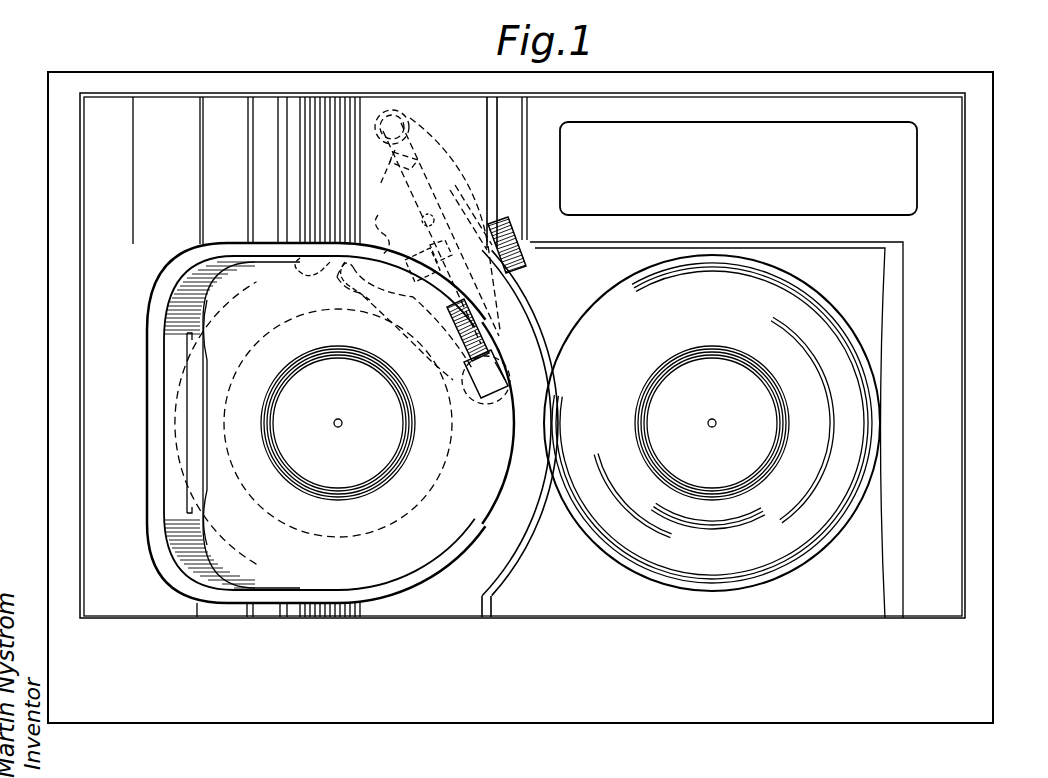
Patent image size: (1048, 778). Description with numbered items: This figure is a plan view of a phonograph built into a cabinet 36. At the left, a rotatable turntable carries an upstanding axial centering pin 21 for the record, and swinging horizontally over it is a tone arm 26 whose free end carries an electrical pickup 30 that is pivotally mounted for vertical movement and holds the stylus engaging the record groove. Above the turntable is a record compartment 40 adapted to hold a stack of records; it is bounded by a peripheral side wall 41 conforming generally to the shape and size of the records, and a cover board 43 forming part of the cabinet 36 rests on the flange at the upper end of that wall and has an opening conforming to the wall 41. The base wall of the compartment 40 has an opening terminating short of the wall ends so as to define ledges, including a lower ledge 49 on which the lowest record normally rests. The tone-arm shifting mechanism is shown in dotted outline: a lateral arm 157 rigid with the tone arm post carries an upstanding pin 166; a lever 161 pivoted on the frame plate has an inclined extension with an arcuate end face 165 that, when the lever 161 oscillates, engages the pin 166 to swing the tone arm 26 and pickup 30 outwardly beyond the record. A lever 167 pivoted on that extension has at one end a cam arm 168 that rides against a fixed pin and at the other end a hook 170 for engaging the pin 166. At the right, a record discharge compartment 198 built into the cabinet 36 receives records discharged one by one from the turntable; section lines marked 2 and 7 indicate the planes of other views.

The section line 2- 2 is at (70, 423).
The section line 7-7 / right turntable 7 is at (42, 423).
The centering pin 21 is at (343, 422).
The tone arm 26 is at (460, 320).
The electrical pickup 30 is at (470, 373).
The cabinet 36 is at (247, 78).
The record compartment 40 is at (150, 331).
The peripheral side wall 41 is at (185, 310).
The cover board 43 is at (168, 105).
The lower ledge 49 is at (203, 341).
The lateral arm 157 is at (398, 180).
The lever 161 is at (397, 337).
The arcuate end face 165 is at (390, 228).
The upstanding pin 166 is at (434, 221).
The lever 167 is at (372, 281).
The cam arm 168 is at (308, 280).
The hook 170 is at (425, 253).
The record discharge compartment 198 is at (806, 258).